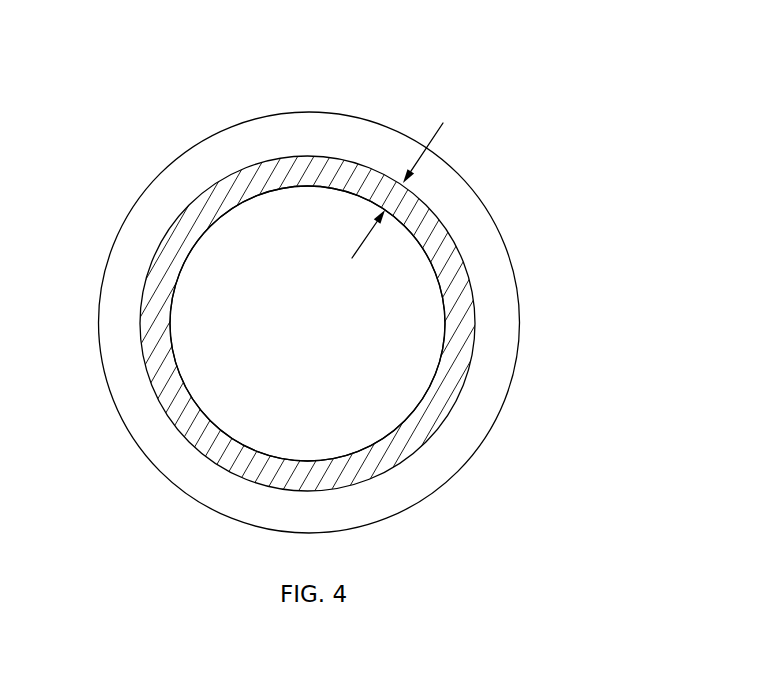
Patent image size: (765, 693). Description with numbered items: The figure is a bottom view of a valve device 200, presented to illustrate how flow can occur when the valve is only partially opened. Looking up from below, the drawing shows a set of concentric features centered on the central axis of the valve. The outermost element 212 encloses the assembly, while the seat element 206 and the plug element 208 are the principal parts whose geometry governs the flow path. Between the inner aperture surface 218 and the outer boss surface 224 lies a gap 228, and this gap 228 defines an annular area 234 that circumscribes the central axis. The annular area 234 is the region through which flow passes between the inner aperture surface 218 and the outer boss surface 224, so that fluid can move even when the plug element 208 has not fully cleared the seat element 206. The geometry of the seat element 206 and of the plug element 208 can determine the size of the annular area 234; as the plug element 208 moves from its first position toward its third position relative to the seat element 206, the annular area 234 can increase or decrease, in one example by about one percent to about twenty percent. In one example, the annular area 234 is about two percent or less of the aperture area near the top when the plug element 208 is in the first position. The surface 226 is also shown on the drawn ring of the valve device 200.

The valve device 200 is at (356, 310).
The seat element 206 is at (356, 323).
The outer wall 212 is at (182, 175).
The plug element 208 is at (320, 323).
The annular area 234 is at (465, 310).
The inner surface of inner layer 226 is at (443, 367).
The inner aperture surface 218 is at (409, 447).
The outer boss surface 224 is at (192, 292).
The gap 228 is at (430, 138).